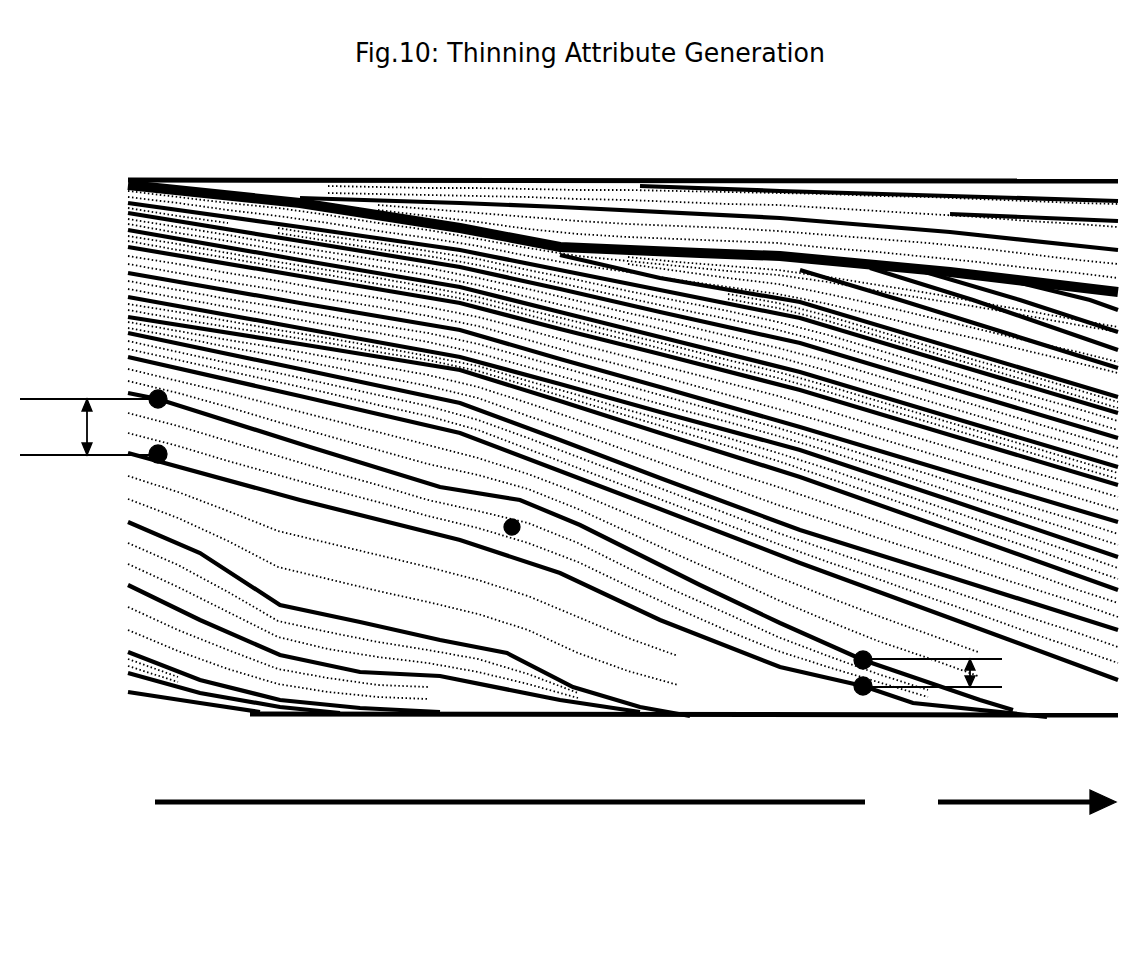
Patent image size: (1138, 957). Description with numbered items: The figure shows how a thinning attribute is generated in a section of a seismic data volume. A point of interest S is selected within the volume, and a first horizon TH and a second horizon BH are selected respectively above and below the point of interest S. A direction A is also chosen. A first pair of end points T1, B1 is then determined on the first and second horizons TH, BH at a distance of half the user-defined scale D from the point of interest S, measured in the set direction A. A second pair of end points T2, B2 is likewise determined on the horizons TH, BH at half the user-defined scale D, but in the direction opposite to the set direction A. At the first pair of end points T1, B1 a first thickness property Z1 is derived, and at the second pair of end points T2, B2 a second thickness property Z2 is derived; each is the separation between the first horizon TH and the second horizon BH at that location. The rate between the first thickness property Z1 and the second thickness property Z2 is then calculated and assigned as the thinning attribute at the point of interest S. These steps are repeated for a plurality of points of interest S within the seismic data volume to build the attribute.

The first horizon TH is at (317, 452).
The second horizon BH is at (316, 505).
The second pair upper end point T2 is at (182, 373).
The second pair lower end point B2 is at (185, 489).
The second thickness property Z2 is at (85, 428).
The point of interest S is at (529, 534).
The first pair upper end point T1 is at (890, 628).
The first pair lower end point B1 is at (890, 732).
The first thickness property Z1 is at (966, 678).
The user-defined scale D is at (510, 836).
The direction A is at (1027, 828).